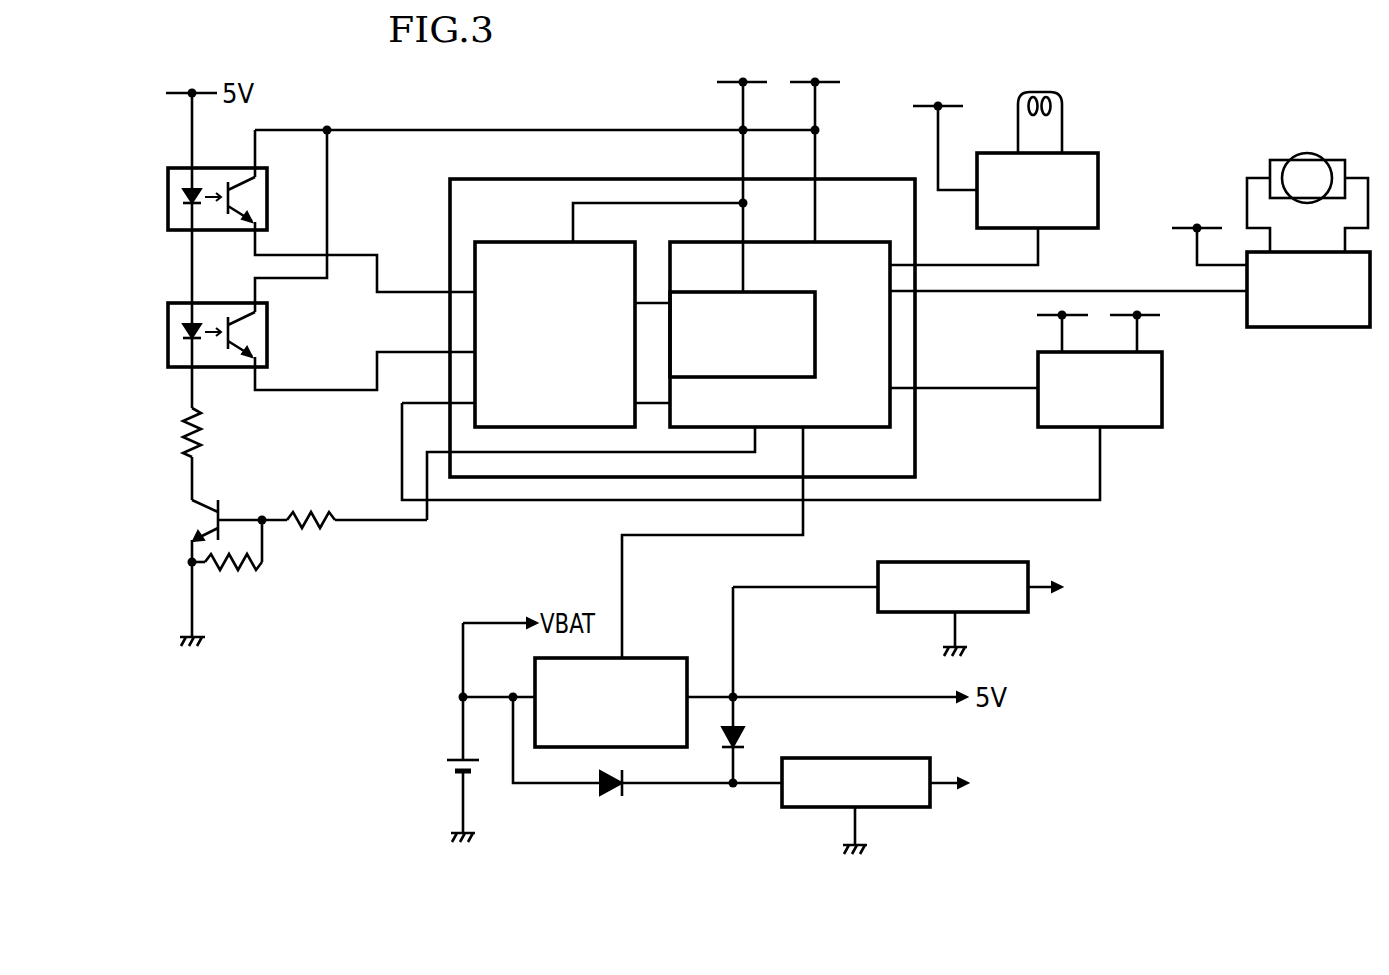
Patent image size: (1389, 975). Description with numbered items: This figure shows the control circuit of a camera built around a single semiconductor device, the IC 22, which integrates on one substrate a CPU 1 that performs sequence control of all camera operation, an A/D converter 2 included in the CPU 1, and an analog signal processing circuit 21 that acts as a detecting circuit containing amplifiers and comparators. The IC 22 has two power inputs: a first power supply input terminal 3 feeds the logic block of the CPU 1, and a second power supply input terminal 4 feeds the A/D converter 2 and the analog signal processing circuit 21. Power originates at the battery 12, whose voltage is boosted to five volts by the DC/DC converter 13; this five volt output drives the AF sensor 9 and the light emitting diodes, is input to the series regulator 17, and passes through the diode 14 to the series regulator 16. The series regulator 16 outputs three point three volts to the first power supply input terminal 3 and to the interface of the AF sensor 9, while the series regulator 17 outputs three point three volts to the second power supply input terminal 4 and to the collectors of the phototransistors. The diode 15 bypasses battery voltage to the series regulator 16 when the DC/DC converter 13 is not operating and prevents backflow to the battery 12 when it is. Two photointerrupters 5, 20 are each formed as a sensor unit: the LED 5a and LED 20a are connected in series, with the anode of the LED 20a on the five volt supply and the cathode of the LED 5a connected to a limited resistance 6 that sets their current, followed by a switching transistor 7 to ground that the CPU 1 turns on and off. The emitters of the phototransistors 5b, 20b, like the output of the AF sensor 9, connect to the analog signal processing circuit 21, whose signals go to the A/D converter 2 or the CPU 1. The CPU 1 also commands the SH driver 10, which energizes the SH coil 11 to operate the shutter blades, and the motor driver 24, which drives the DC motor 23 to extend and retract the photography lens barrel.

The CPU 1 is at (845, 243).
The A/D converter 2 is at (828, 305).
The first power supply input terminal 3 is at (817, 178).
The second power supply input terminal 4 is at (742, 178).
The photointerrupter 5 is at (221, 370).
The LED 5a is at (184, 331).
The phototransistor 5b is at (268, 325).
The limited resistance 6 is at (185, 428).
The switching transistor 7 is at (200, 522).
The AF sensor 9 is at (1164, 388).
The SH driver 10 is at (1100, 160).
The SH coil 11 is at (1034, 98).
The battery 12 is at (452, 762).
The DC/DC converter 13 is at (656, 660).
The diode 14 is at (745, 737).
The diode 15 is at (614, 797).
The series regulator 16 is at (808, 810).
The series regulator 17 is at (945, 561).
The photointerrupter 20 is at (240, 223).
The LED 20a is at (184, 196).
The phototransistor 20b is at (268, 190).
The analog signal processing circuit 21 is at (540, 242).
The semiconductor device (IC) 22 is at (500, 178).
The DC motor 23 is at (1341, 158).
The motor driver 24 is at (1325, 328).